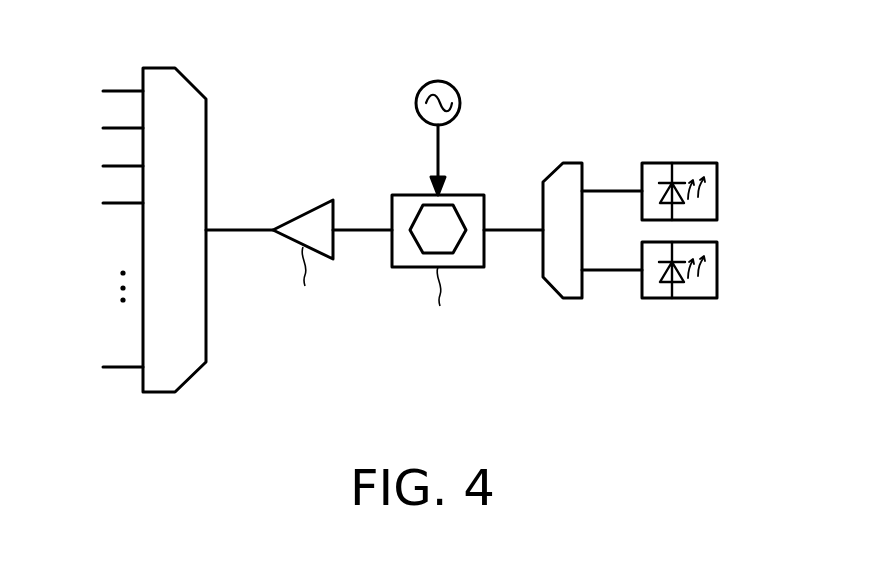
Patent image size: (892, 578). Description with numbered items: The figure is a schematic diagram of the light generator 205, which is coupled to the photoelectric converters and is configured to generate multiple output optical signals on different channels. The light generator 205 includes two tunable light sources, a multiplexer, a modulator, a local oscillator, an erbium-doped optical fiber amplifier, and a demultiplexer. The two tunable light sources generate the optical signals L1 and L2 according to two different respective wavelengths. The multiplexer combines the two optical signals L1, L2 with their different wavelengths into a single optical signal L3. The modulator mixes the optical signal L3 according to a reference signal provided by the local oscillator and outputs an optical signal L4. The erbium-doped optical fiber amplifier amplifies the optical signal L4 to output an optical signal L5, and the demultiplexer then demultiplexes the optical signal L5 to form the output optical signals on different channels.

The light generator 205 is at (418, 232).
The optical signal L1 is at (612, 174).
The optical signal L2 is at (612, 252).
The optical signal L3 is at (513, 251).
The optical signal L4 is at (362, 251).
The optical signal L5 is at (239, 251).